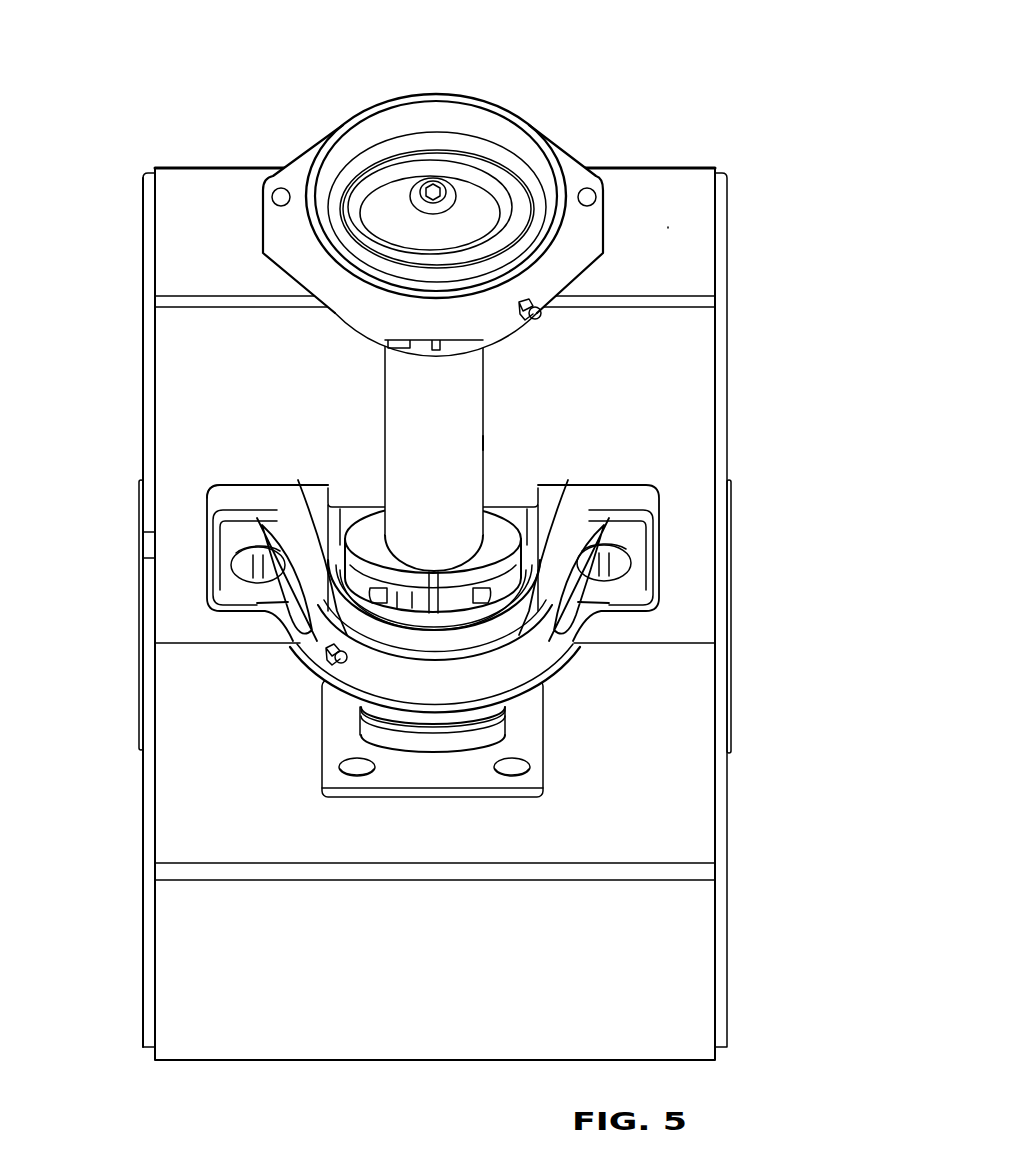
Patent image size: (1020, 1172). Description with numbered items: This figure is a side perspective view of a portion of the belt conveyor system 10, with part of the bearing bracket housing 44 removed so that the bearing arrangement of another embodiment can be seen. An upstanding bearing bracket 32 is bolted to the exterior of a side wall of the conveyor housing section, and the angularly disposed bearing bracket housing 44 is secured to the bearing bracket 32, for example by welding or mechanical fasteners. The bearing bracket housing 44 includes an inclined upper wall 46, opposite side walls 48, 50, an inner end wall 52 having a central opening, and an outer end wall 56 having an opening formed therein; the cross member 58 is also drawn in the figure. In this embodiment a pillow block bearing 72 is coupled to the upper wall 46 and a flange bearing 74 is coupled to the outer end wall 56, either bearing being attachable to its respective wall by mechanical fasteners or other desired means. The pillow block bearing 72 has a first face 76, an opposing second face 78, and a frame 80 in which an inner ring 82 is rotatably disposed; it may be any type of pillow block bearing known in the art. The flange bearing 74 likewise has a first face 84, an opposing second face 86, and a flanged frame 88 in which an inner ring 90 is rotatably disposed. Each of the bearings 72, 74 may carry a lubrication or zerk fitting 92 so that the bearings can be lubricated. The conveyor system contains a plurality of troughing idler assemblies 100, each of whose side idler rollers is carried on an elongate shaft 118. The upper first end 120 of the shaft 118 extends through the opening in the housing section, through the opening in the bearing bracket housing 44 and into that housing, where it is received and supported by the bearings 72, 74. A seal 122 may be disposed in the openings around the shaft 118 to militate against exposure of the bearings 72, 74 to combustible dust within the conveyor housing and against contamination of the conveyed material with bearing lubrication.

The belt conveyor system 10 is at (72, 90).
The bearing bracket 32 is at (724, 163).
The bearing bracket housing 44 is at (184, 160).
The inclined upper wall 46 is at (203, 347).
The side wall 48 is at (139, 638).
The side wall 50 is at (713, 362).
The inner end wall 52 is at (213, 840).
The outer end wall 56 is at (668, 228).
The upper cross member 58 is at (677, 309).
The pillow block bearing 72 is at (670, 588).
The flange bearing 74 is at (310, 148).
The first face 76 is at (570, 650).
The second face 78 is at (340, 545).
The frame 80 is at (203, 577).
The inner ring 82 is at (383, 504).
The first face 84 is at (512, 327).
The second face 86 is at (525, 220).
The flanged frame 88 is at (558, 200).
The inner ring 90 is at (503, 223).
The zerk fitting 92 is at (540, 320).
The troughing idler assembly 100 is at (375, 390).
The shaft 118 is at (483, 446).
The first end 120 is at (395, 195).
The seal 122 is at (310, 755).